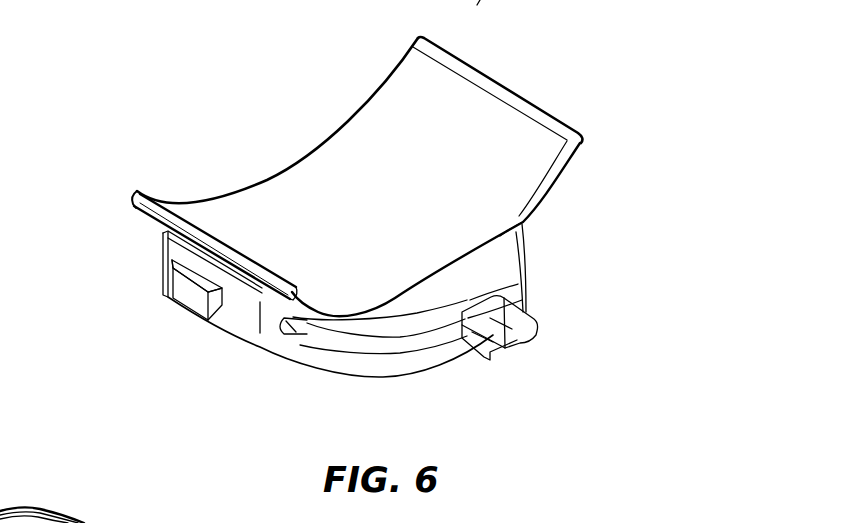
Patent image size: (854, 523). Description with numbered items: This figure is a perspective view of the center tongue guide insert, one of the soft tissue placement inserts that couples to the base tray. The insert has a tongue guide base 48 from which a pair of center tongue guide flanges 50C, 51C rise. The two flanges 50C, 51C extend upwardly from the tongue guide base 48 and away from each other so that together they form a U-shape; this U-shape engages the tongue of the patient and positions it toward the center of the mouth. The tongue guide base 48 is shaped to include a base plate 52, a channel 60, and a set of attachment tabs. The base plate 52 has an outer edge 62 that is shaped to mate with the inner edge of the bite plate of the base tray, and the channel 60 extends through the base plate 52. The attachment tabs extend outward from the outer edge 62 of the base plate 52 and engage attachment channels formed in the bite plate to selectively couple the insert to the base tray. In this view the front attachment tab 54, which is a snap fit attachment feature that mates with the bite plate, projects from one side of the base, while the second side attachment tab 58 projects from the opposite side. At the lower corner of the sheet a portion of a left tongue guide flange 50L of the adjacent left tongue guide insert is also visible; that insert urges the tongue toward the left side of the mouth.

The center tongue guide flange 50C is at (130, 222).
The center tongue guide flange 51C is at (572, 106).
The tongue guide base 48 is at (563, 233).
The base plate 52 is at (145, 268).
The second side attachment tab 58 is at (178, 322).
The channel 60 is at (309, 346).
The outer edge 62 is at (536, 272).
The front attachment tab 54 is at (554, 327).
The left tongue guide flange 50L is at (84, 503).